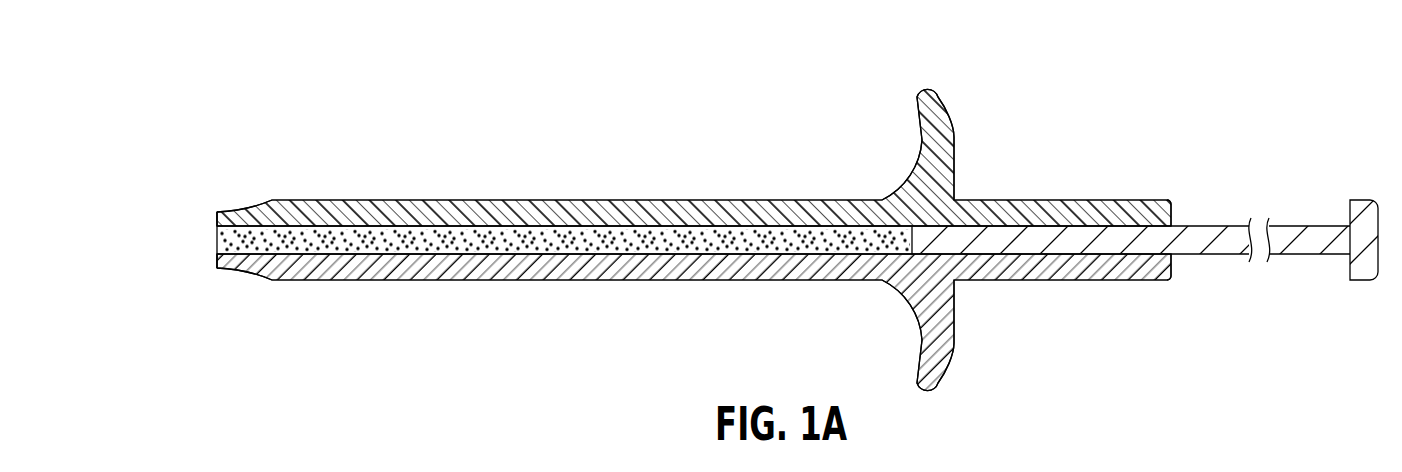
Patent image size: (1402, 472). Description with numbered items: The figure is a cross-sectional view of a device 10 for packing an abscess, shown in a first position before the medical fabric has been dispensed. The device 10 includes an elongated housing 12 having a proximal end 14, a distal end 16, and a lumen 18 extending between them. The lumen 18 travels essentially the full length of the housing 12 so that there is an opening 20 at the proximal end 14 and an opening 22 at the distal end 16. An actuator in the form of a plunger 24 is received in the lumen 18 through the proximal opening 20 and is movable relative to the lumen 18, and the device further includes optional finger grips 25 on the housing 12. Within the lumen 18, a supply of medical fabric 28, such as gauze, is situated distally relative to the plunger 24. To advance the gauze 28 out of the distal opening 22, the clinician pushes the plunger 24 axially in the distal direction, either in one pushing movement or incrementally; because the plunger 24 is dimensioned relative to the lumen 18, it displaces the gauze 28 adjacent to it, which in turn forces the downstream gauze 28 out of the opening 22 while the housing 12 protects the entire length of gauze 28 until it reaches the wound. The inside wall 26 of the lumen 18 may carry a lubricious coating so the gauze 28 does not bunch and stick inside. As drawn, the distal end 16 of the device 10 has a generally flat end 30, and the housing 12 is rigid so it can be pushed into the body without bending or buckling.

The device 10 is at (324, 90).
The elongated housing 12 is at (562, 200).
The proximal end 14 is at (1161, 201).
The distal end 16 is at (237, 217).
The lumen 18 is at (392, 233).
The opening 20 is at (1178, 233).
The opening 22 is at (217, 231).
The plunger 24 is at (1363, 205).
The finger grips 25 is at (946, 123).
The inside wall 26 is at (556, 255).
The medical fabric 28 is at (507, 248).
The generally flat end 30 is at (217, 256).